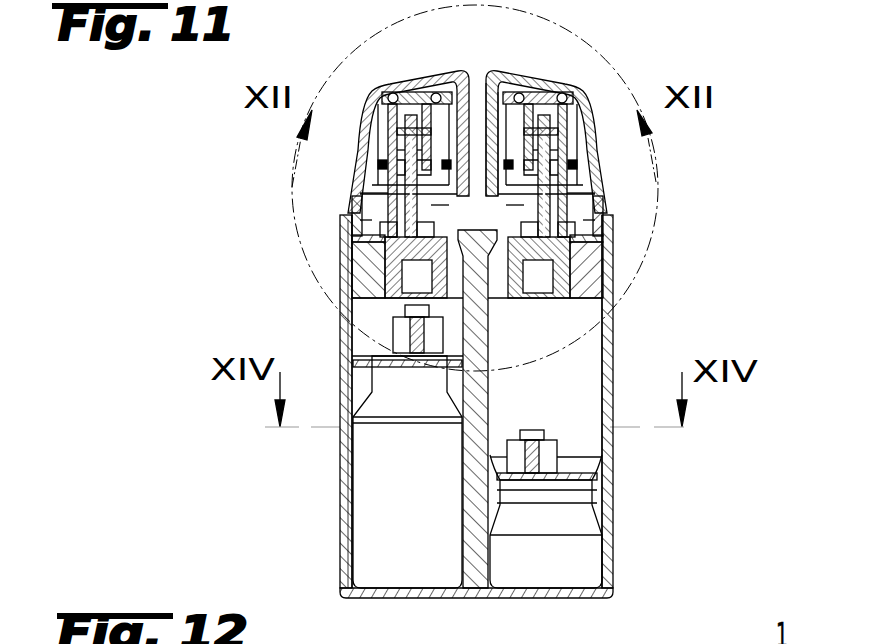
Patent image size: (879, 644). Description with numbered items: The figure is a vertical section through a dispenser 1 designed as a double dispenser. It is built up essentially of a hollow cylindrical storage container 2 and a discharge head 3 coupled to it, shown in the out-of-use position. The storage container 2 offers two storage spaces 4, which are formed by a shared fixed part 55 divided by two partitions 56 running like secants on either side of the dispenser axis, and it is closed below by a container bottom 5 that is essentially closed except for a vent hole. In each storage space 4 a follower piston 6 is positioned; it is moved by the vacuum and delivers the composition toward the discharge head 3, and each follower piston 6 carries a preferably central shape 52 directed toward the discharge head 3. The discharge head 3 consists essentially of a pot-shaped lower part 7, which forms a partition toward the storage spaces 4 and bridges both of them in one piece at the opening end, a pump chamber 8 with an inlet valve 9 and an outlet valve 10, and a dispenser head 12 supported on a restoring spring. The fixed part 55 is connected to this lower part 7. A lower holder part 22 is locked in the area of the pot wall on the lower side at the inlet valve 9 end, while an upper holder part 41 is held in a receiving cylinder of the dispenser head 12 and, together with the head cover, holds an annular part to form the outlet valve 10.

The dispenser 1 is at (605, 56).
The storage container 2 is at (600, 535).
The discharge head 3 is at (364, 60).
The storage space 4 is at (372, 314).
The container bottom 5 is at (516, 600).
The follower piston 6 is at (360, 395).
The lower part 7 is at (606, 235).
The pump chamber 8 is at (405, 207).
The inlet valve 9 is at (380, 226).
The outlet valve 10 is at (389, 74).
The dispenser head 12 is at (433, 58).
The lower holder part 22 is at (385, 257).
The upper holder part 41 is at (390, 128).
The shape 52 is at (376, 335).
The fixed part 55 is at (352, 497).
The partition 56 is at (477, 512).